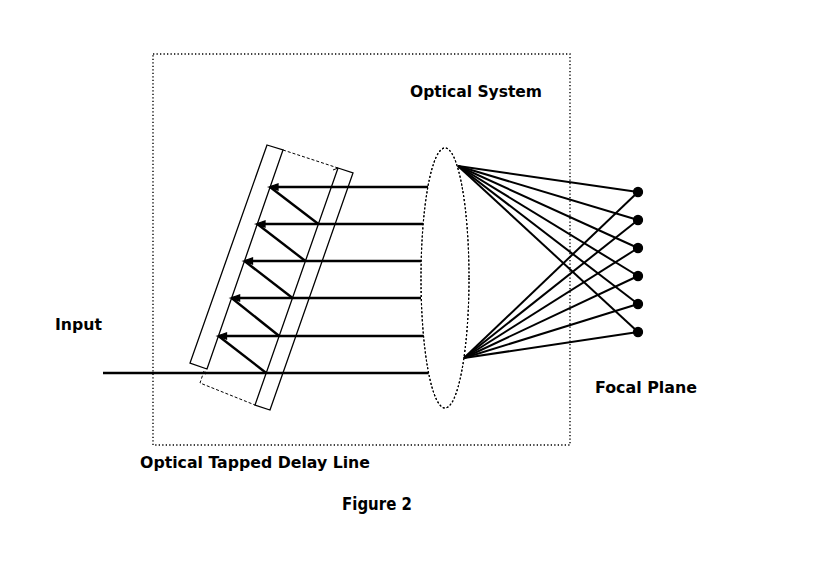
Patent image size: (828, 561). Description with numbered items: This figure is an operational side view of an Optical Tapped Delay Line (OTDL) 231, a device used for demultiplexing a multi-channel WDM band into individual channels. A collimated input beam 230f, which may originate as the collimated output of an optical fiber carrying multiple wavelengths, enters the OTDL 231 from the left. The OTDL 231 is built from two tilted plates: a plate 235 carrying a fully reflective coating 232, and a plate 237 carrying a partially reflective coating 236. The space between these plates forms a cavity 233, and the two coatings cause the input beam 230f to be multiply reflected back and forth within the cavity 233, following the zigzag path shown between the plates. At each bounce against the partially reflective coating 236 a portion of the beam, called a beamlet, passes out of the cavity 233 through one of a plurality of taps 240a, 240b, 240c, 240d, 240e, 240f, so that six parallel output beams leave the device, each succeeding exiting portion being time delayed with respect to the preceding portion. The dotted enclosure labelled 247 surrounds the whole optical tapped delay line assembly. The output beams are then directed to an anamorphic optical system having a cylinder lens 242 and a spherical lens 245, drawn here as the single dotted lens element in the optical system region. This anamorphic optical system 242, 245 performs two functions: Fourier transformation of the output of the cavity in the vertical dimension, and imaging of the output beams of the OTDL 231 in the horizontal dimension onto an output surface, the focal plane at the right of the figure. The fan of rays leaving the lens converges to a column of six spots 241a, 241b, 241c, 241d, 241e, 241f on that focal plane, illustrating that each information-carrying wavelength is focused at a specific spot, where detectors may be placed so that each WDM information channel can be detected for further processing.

The Optical Tapped Delay Line 231 is at (291, 253).
The fully reflective coating 232 is at (285, 157).
The cavity 233 is at (233, 392).
The plate 235 is at (260, 166).
The partially reflective coating 236 is at (335, 175).
The plate 237 is at (353, 172).
The collimated input beam 230f is at (154, 365).
The tap 240a is at (283, 375).
The tap 240b is at (296, 338).
The tap 240c is at (309, 300).
The tap 240d is at (322, 263).
The tap 240e is at (335, 226).
The tap 240f is at (348, 189).
The cylinder lens 242 is at (445, 268).
The spherical lens 245 is at (458, 268).
The focal plane spot a 241a is at (641, 189).
The focal plane spot b 241b is at (641, 217).
The focal plane spot c 241c is at (641, 245).
The focal plane spot d 241d is at (641, 273).
The focal plane spot e 241e is at (641, 301).
The focal plane spot f 241f is at (641, 329).
The optical tapped delay line module 247 is at (361, 260).